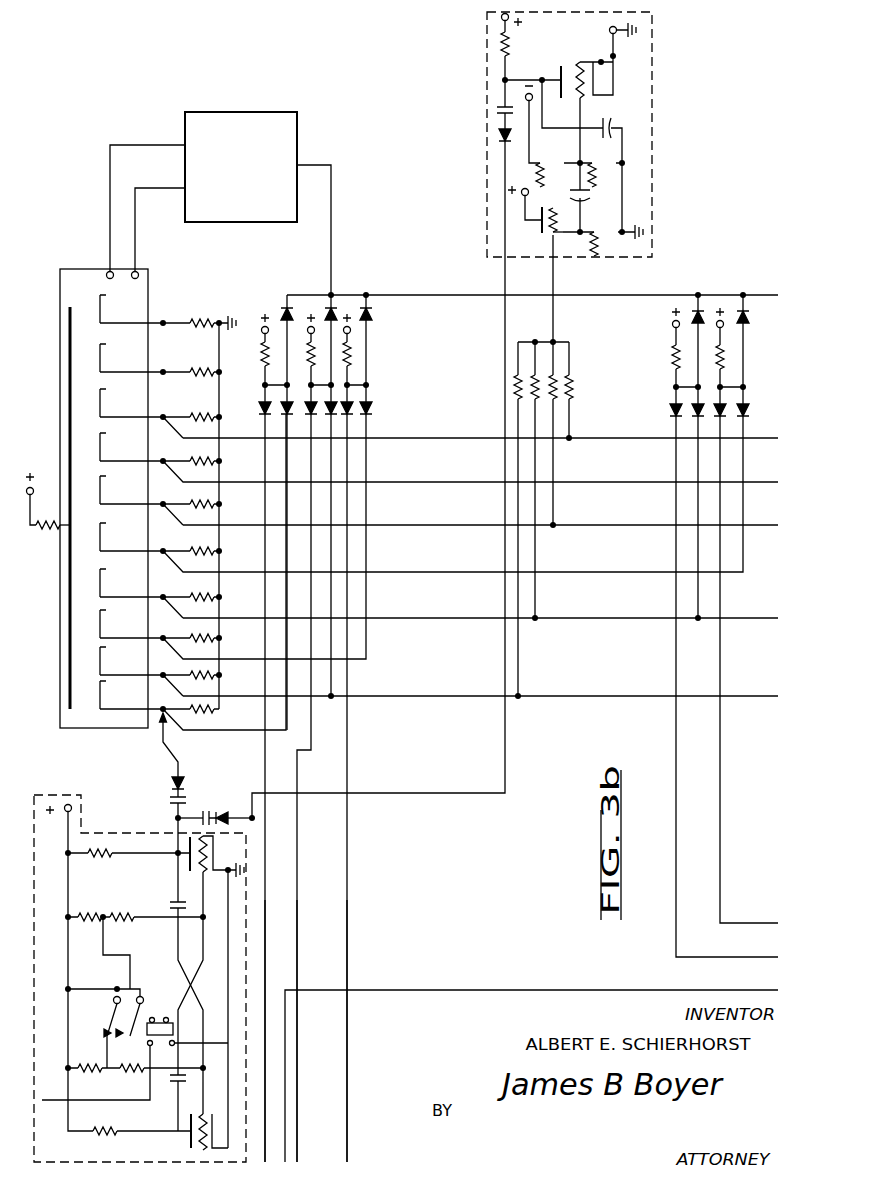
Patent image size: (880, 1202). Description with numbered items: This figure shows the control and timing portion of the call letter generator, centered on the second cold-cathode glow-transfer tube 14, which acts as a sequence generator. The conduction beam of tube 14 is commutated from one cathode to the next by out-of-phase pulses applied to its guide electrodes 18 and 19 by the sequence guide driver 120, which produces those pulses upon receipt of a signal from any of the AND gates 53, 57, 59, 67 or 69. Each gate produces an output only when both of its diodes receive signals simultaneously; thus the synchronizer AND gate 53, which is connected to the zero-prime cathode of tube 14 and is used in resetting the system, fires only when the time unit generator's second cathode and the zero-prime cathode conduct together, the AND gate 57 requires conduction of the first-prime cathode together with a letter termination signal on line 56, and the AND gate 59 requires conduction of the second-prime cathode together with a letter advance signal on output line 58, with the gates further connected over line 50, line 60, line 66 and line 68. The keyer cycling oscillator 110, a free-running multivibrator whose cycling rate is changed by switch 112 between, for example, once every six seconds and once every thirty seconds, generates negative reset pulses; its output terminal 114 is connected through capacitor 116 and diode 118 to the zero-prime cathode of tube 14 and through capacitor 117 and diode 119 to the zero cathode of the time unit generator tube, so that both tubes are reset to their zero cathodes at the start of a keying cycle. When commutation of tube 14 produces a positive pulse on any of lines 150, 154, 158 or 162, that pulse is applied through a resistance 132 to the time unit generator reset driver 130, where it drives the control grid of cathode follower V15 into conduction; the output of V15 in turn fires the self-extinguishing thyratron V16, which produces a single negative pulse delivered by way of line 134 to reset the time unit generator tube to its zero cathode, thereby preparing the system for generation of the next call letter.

The second cold-cathode glow-transfer tube 14 is at (58, 328).
The guide electrode 18 is at (111, 279).
The guide electrode 19 is at (136, 279).
The sequence guide driver 120 is at (244, 155).
The time unit generator reset driver 130 is at (583, 134).
The resistance 132 is at (551, 465).
The line 134 is at (420, 793).
The line 150 is at (548, 696).
The line 154 is at (561, 618).
The line 158 is at (588, 525).
The line 162 is at (606, 440).
The synchronizer AND gate 53 is at (276, 728).
The AND gate 57 is at (317, 728).
The AND gate 59 is at (356, 728).
The AND gate 67 is at (687, 456).
The AND gate 69 is at (731, 355).
The line 66 is at (679, 838).
The line 68 is at (721, 800).
The line 50 is at (267, 915).
The line 56 is at (299, 903).
The output line 58 is at (349, 903).
The line 60 is at (477, 990).
The keyer cycling oscillator 110 is at (140, 959).
The switch 112 is at (106, 1027).
The output terminal 114 is at (174, 817).
The capacitor 116 is at (185, 798).
The capacitor 117 is at (207, 805).
The diode 118 is at (171, 781).
The diode 119 is at (224, 807).
The cathode follower V15 is at (544, 221).
The self-extinguishing thyratron V16 is at (597, 93).